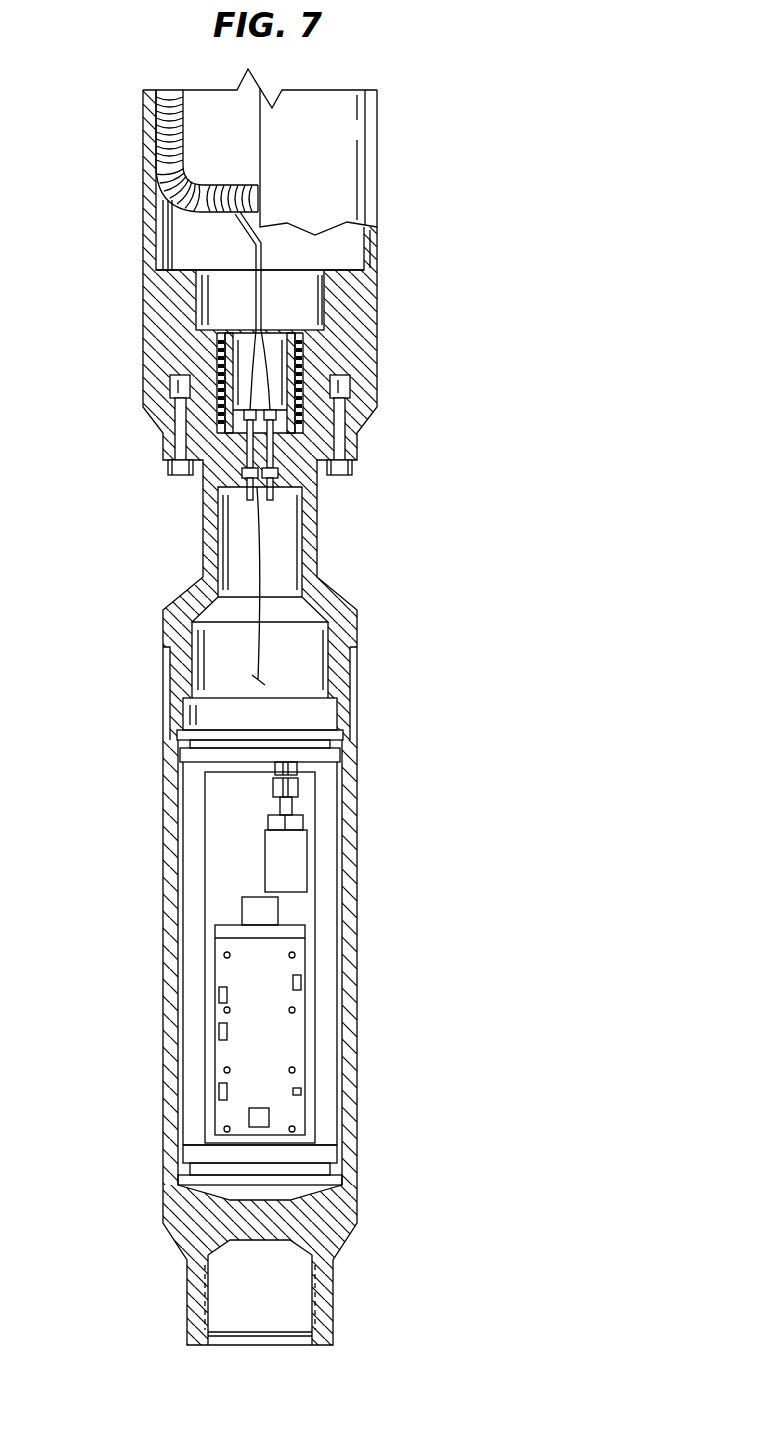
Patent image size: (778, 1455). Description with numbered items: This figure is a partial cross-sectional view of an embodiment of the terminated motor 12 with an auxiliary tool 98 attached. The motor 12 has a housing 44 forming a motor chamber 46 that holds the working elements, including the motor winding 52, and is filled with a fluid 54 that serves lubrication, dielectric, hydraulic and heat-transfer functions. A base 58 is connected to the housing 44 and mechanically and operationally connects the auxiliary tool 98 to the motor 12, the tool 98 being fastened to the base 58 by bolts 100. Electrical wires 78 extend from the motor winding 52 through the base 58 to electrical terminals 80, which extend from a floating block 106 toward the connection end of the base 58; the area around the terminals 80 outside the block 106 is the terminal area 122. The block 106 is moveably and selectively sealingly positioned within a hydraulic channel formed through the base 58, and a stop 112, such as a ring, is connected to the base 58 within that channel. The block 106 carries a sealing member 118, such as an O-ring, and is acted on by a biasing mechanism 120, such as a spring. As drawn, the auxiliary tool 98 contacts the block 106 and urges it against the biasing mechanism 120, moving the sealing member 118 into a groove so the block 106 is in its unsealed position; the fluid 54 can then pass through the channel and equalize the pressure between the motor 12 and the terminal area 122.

The terminated motor 12 is at (398, 130).
The housing 44 is at (377, 182).
The motor chamber 46 is at (238, 161).
The motor winding 52 is at (167, 137).
The fluid 54 is at (213, 117).
The base 58 is at (143, 405).
The electrical wires 78 is at (240, 224).
The electrical terminals 80 is at (228, 402).
The auxiliary tool 98 is at (163, 630).
The bolts 100 is at (353, 470).
The floating block 106 is at (220, 357).
The stop 112 is at (303, 412).
The sealing member 118 is at (300, 400).
The biasing mechanism 120 is at (300, 350).
The terminal area 122 is at (230, 445).